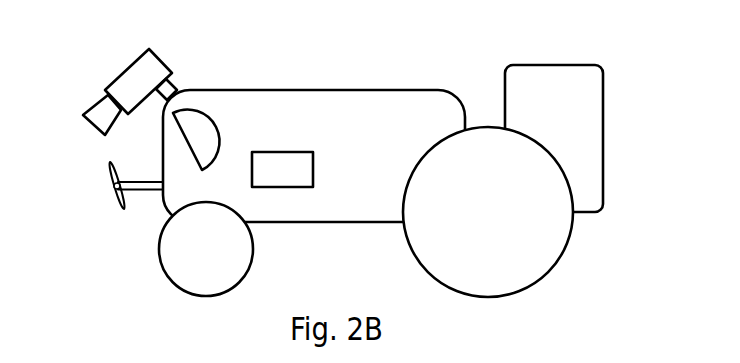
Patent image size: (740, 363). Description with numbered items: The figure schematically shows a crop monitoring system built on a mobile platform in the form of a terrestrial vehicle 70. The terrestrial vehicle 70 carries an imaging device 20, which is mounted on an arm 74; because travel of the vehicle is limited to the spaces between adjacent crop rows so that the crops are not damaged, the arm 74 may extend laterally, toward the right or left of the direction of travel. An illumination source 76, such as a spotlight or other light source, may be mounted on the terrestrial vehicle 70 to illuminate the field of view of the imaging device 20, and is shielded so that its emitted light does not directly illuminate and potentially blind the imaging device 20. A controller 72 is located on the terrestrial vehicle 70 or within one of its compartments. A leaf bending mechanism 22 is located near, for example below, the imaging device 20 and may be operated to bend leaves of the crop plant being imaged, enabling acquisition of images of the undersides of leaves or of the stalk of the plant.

The imaging device 20 is at (122, 75).
The leaf bending mechanism 22 is at (117, 197).
The terrestrial vehicle 70 is at (403, 90).
The controller 72 is at (279, 155).
The arm 74 is at (161, 88).
The illumination source 76 is at (212, 123).